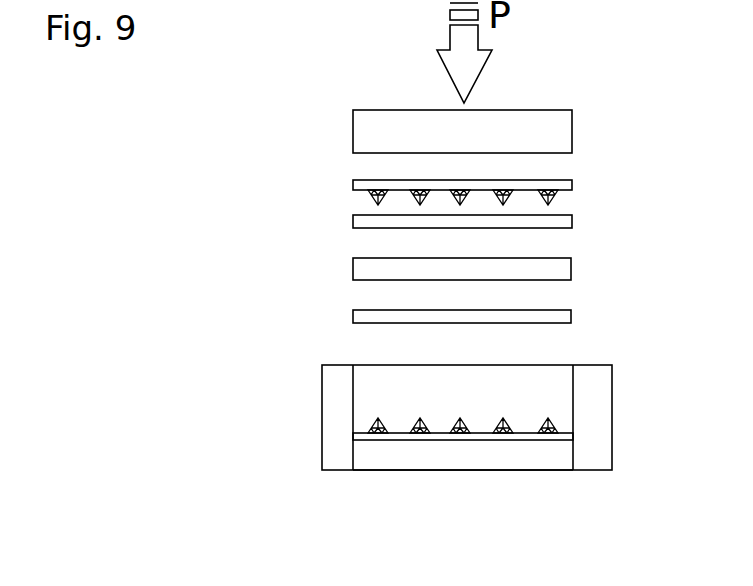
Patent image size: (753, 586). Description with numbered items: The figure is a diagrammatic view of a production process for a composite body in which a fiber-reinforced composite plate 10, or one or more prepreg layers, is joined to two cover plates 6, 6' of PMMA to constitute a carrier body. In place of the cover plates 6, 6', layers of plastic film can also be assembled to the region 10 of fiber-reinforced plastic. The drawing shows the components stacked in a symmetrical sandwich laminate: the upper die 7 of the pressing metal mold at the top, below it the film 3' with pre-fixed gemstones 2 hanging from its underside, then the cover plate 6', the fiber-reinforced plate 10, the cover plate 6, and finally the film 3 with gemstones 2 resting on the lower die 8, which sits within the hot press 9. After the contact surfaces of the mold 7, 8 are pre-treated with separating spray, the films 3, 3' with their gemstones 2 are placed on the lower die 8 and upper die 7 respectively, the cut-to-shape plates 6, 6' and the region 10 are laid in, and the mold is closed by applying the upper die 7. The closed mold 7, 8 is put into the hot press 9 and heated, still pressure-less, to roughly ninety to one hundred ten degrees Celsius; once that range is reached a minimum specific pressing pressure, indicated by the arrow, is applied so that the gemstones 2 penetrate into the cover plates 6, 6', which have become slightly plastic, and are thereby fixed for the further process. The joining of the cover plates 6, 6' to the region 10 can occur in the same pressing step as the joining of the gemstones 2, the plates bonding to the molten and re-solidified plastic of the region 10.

The gemstones 2 is at (505, 197).
The film 3 is at (510, 462).
The film 3' is at (516, 169).
The cover plate 6 is at (417, 335).
The cover plate 6' is at (417, 240).
The upper die 7 is at (552, 127).
The lower die 8 is at (548, 458).
The hot press 9 is at (340, 450).
The fiber-reinforced composite plate 10 is at (383, 273).